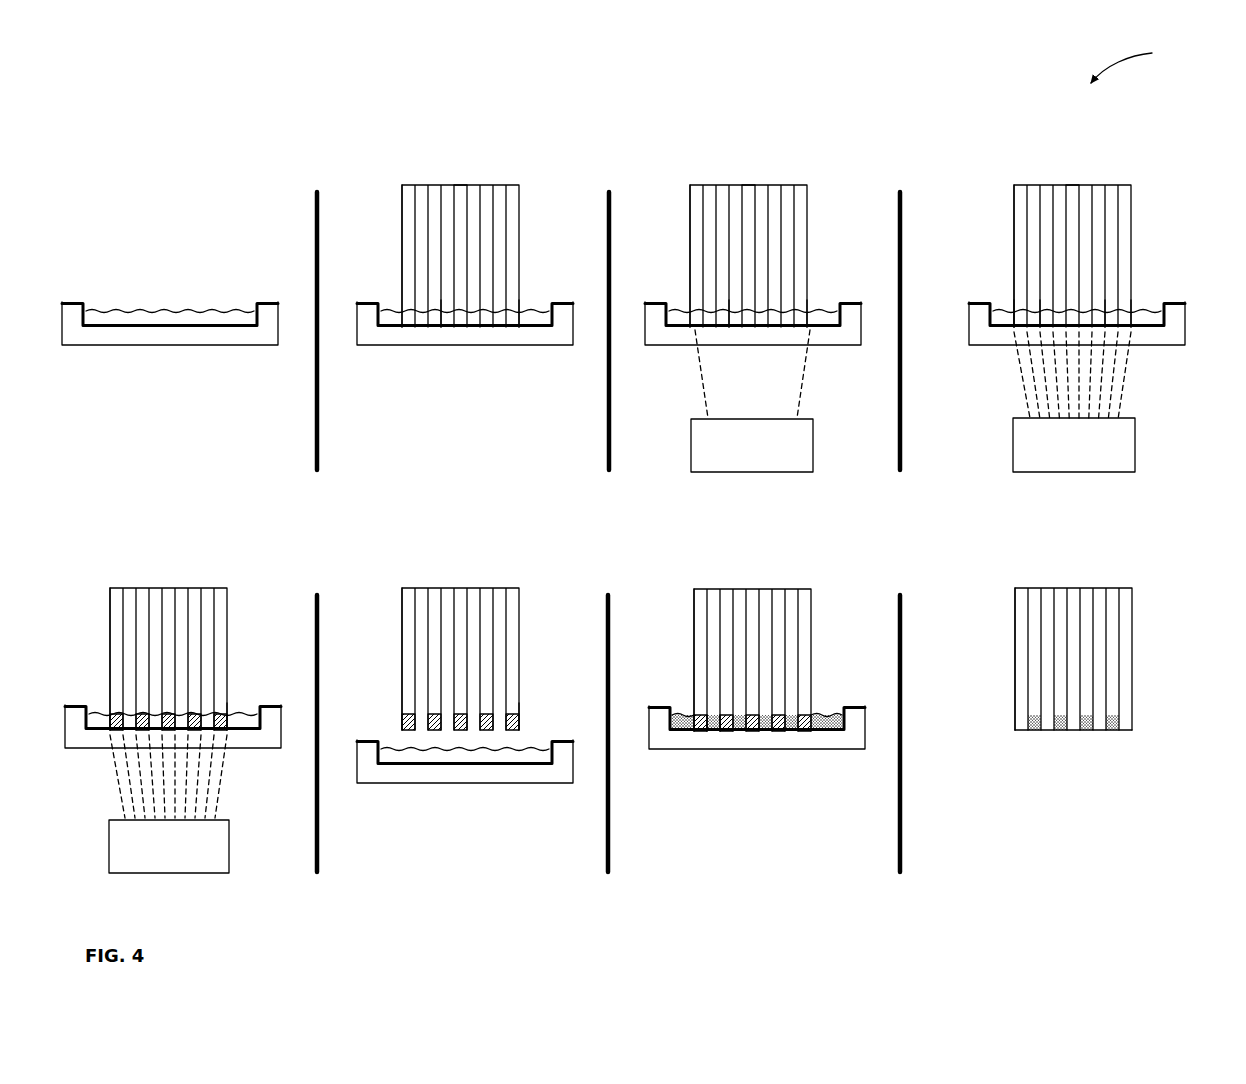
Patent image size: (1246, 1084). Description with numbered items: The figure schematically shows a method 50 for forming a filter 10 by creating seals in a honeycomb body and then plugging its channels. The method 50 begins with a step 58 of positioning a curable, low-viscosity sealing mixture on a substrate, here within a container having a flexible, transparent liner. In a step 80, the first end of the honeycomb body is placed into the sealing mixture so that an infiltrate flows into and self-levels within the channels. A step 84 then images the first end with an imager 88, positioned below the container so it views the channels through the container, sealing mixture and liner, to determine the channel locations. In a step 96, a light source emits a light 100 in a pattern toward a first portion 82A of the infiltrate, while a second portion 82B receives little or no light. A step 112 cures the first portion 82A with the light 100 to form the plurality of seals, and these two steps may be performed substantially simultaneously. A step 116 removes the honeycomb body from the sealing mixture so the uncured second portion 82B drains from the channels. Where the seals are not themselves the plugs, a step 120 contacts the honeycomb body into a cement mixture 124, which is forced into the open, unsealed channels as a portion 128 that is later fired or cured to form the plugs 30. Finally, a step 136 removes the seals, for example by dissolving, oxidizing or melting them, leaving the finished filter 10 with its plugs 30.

The filter 10 is at (1098, 619).
The plugs 30 is at (1086, 759).
The method 50 is at (1139, 62).
The step of positioning sealing mixture 58 is at (180, 336).
The step of placing the first end into the sealing mixture 80 is at (471, 279).
The first portion of the infiltrate 82A is at (977, 259).
The second portion of the infiltrate 82B is at (1158, 248).
The step of imaging the first end 84 is at (759, 299).
The imager 88 is at (752, 401).
The step of emitting a light 96 is at (1072, 299).
The light 100 is at (1106, 375).
The step of curing the first portion 112 is at (179, 703).
The step of removing the honeycomb body from the sealing mixture 116 is at (470, 695).
The step of contacting the honeycomb body into a cement mixture 120 is at (760, 695).
The cement mixture 124 is at (738, 688).
The portion of the cement mixture 128 is at (682, 668).
The step of removing the plurality of seals 136 is at (1099, 683).